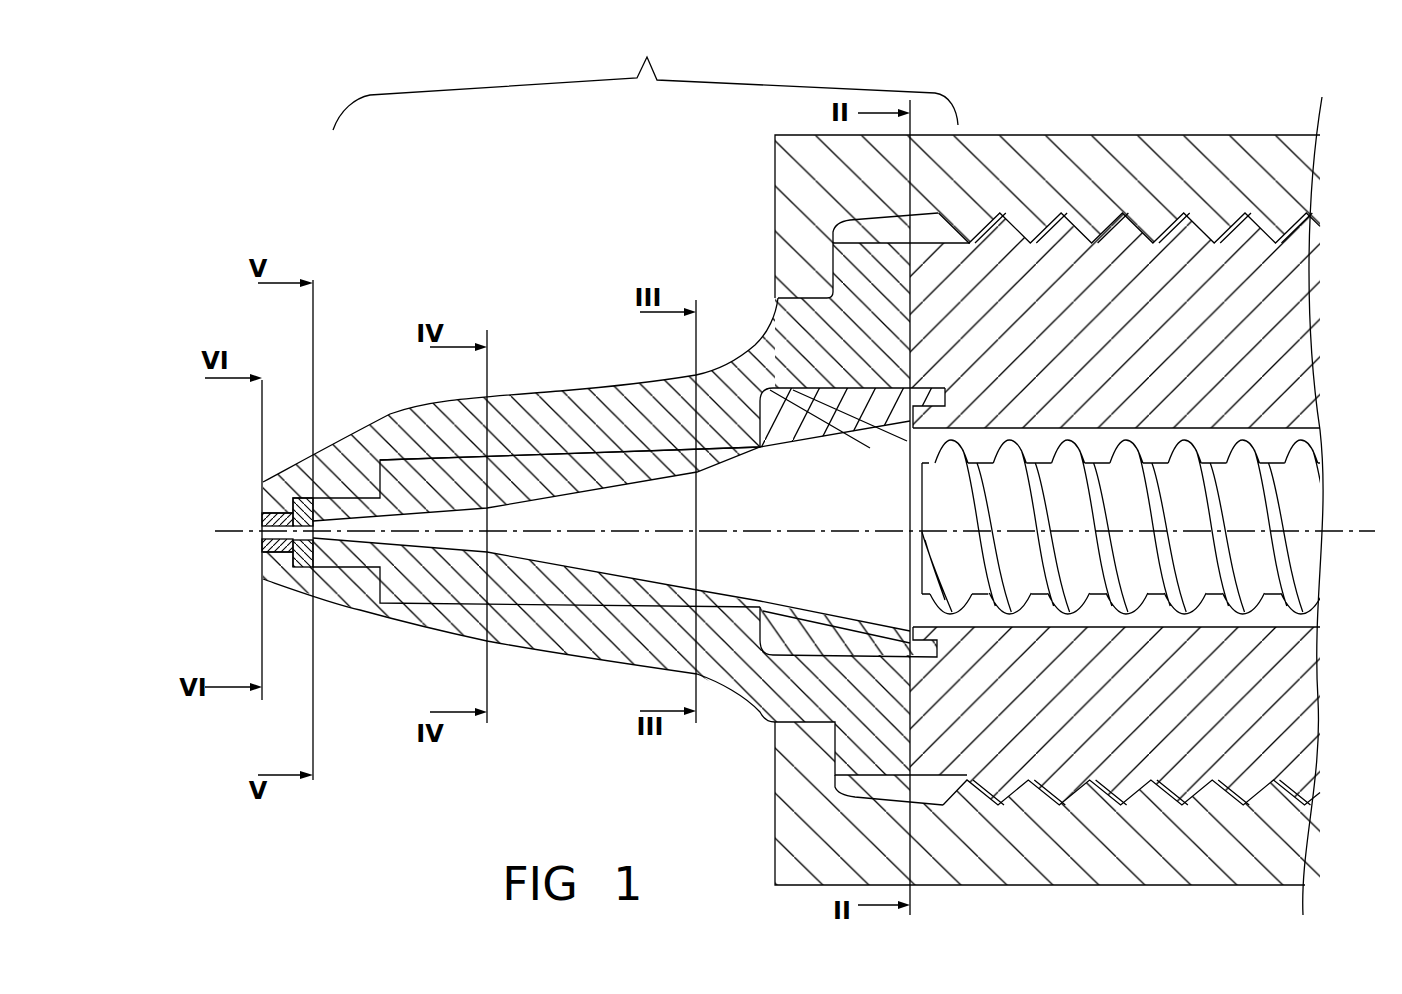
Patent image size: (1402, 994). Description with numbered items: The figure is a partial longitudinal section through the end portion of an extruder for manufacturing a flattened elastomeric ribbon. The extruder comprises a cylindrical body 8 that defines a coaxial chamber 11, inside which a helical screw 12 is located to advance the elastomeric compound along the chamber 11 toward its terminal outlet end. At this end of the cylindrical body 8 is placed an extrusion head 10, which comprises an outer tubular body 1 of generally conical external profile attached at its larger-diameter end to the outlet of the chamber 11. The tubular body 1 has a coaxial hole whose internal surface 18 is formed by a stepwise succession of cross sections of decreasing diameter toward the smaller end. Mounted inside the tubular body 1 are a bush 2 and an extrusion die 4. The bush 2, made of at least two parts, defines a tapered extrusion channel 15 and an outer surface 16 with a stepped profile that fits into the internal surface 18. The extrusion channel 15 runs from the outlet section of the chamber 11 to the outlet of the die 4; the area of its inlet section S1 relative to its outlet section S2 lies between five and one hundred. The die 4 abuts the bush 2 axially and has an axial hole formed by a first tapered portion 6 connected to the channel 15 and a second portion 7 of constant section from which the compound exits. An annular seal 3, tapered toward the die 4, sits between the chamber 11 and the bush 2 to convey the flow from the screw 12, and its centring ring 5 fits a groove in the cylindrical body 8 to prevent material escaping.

The outer tubular body 1 is at (673, 372).
The bush 2 is at (548, 575).
The annular seal 3 is at (937, 648).
The extrusion die 4 is at (283, 558).
The centring ring 5 is at (940, 650).
The first tapered portion 6 is at (318, 560).
The second portion of constant section 7 is at (263, 530).
The cylindrical body 8 is at (1210, 345).
The extrusion head 10 is at (555, 87).
The chamber 11 is at (1060, 425).
The helical screw 12 is at (1235, 505).
The extrusion channel 15 is at (663, 569).
The outer surface 16 is at (522, 477).
The internal surface 18 is at (573, 463).
The inlet section S1 is at (760, 345).
The outlet section S2 is at (318, 521).